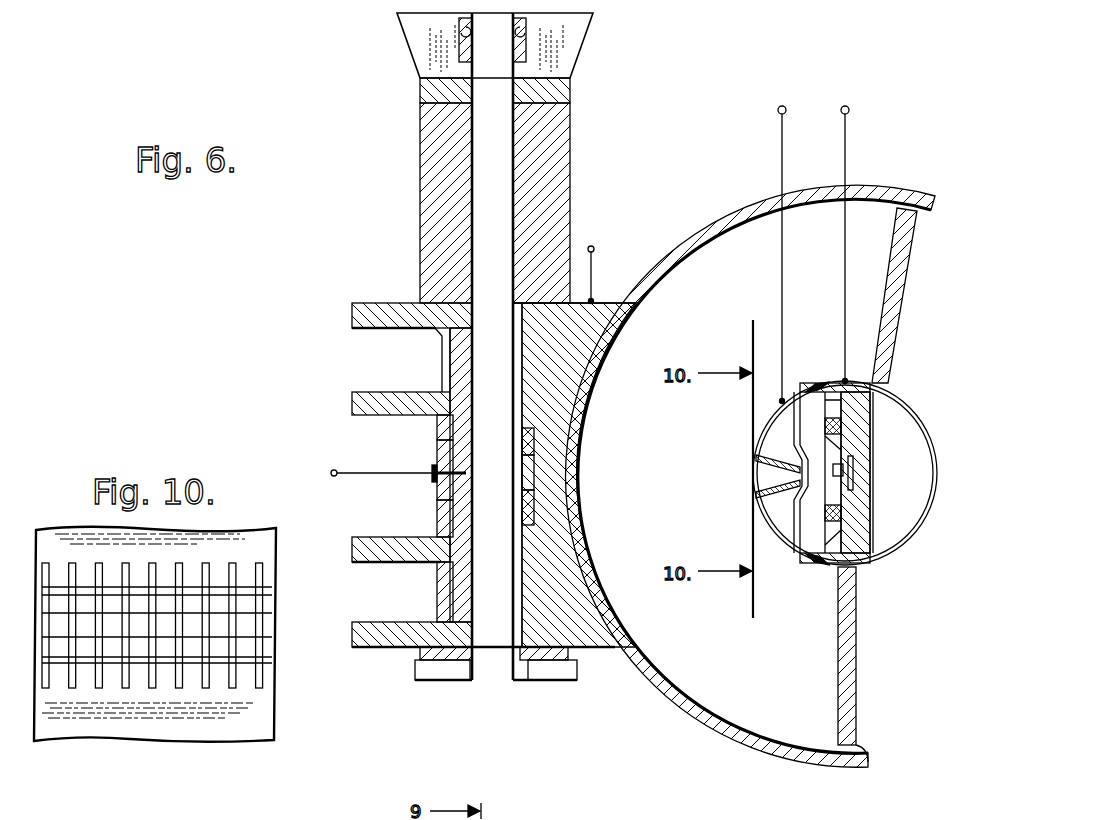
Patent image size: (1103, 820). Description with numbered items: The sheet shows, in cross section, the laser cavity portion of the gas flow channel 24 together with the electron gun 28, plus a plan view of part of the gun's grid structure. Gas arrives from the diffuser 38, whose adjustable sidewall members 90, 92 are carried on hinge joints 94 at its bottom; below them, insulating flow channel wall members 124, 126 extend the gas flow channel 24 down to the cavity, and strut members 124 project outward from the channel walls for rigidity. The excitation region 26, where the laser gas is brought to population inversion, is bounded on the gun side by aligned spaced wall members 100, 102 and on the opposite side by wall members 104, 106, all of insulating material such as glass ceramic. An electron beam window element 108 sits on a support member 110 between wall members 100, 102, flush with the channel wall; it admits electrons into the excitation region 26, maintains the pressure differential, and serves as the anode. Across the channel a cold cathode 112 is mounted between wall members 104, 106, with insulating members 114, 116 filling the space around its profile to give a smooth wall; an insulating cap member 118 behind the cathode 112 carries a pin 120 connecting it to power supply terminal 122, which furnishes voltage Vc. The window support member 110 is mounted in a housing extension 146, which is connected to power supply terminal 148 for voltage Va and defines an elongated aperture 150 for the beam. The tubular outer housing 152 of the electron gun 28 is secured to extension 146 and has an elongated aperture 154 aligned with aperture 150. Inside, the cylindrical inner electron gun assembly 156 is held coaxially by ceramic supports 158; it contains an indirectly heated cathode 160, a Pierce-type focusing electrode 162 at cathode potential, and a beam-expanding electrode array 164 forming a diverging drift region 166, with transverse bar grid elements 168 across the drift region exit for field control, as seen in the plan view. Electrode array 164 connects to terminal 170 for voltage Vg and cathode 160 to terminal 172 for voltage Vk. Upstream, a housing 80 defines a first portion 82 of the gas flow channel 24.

In FIG. 6, the diffuser 38 is at (614, 22).
In FIG. 6, the diffuser sidewall member 90 is at (462, 36).
In FIG. 6, the diffuser sidewall member 92 is at (523, 36).
In FIG. 6, the hinge joint 94 is at (514, 98).
In FIG. 6, the flow channel wall member 124 is at (568, 147).
In FIG. 6, the flow channel wall member 126 is at (426, 160).
In FIG. 6, the electron gun 28 is at (706, 200).
In FIG. 6, the power supply terminal 170 is at (779, 113).
In FIG. 6, the power supply terminal 172 is at (848, 112).
In FIG. 6, the power supply terminal 148 is at (608, 266).
In FIG. 6, the housing extension 146 is at (618, 332).
In FIG. 6, the wall member 102 is at (518, 346).
In FIG. 6, the wall member 106 is at (476, 370).
In FIG. 6, the electron beam window element 108 is at (527, 438).
In FIG. 6, the cold cathode 112 is at (476, 465).
In FIG. 6, the insulating member 116 is at (447, 440).
In FIG. 6, the pin 120 is at (432, 470).
In FIG. 6, the insulating cap member 118 is at (447, 484).
In FIG. 6, the insulating member 114 is at (447, 508).
In FIG. 6, the elongated aperture 154 is at (560, 462).
In FIG. 6, the elongated aperture 150 is at (545, 482).
In FIG. 6, the support member 110 is at (560, 533).
In FIG. 6, the wall member 104 is at (441, 571).
In FIG. 6, the gas flow channel 24 is at (437, 600).
In FIG. 6, the wall member 100 is at (598, 573).
In FIG. 6, the housing 80 is at (460, 668).
In FIG. 6, the first portion of gas flow channel 82 is at (560, 670).
In FIG. 6, the tubular outer housing 152 is at (690, 712).
In FIG. 6, the inner electron gun assembly 156 is at (905, 570).
In FIG. 6, the ceramic support 158 is at (902, 292).
In FIG. 6, the cathode 160 is at (853, 458).
In FIG. 6, the focusing electrode 162 is at (822, 422).
In FIG. 6, the beam-expanding electrode array 164 is at (778, 447).
In FIG. 10, the beam-expanding electrode array 164 is at (118, 742).
In FIG. 6, the drift region 166 is at (765, 479).
In FIG. 10, the drift region 166 is at (252, 630).
In FIG. 6, the bar grid element 168 is at (752, 468).
In FIG. 10, the bar grid element 168 is at (215, 646).
In FIG. 6, the power supply terminal 122 is at (332, 480).
In FIG. 6, the excitation region 26 is at (511, 487).